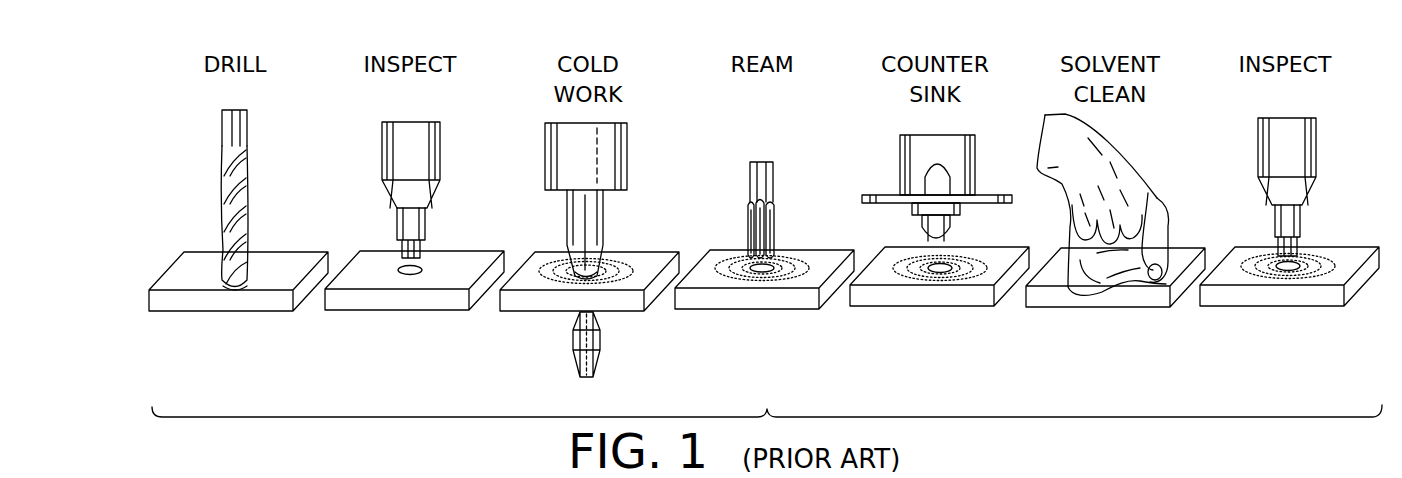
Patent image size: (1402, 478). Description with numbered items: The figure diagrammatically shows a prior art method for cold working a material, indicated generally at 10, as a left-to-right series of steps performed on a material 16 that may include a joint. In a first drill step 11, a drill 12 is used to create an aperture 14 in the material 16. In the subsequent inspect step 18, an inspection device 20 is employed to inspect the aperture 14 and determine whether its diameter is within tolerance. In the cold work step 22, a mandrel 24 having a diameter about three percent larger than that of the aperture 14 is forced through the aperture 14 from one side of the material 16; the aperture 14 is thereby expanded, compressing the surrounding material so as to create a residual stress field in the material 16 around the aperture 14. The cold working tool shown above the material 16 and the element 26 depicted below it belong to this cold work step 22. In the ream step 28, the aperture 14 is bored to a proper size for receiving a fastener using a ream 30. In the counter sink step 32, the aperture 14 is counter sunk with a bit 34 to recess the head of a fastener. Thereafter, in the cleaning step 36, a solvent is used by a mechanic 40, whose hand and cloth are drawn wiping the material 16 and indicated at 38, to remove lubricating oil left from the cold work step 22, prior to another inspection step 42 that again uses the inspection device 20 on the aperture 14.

The prior art method for cold working a material 10 is at (1304, 376).
The drill step 11 is at (213, 324).
The drill 12 is at (222, 126).
The aperture 14 is at (248, 265).
The material 16 is at (240, 313).
The inspect step 18 is at (363, 323).
The inspection device 20 is at (382, 152).
The cold work step 22 is at (533, 325).
The mandrel 24 is at (603, 228).
The mandrel 26 is at (604, 345).
The ream step 28 is at (750, 330).
The ream 30 is at (773, 190).
The counter sink step 32 is at (929, 326).
The bit 34 is at (900, 145).
The cleaning step 36 is at (1113, 316).
The hand 38 is at (1168, 205).
The mechanic 40 is at (1099, 133).
The inspection step 42 is at (1298, 318).